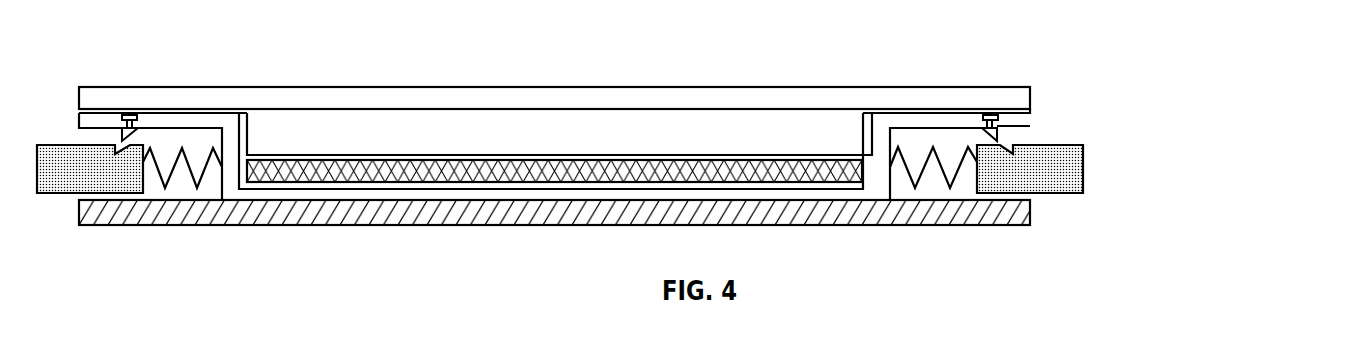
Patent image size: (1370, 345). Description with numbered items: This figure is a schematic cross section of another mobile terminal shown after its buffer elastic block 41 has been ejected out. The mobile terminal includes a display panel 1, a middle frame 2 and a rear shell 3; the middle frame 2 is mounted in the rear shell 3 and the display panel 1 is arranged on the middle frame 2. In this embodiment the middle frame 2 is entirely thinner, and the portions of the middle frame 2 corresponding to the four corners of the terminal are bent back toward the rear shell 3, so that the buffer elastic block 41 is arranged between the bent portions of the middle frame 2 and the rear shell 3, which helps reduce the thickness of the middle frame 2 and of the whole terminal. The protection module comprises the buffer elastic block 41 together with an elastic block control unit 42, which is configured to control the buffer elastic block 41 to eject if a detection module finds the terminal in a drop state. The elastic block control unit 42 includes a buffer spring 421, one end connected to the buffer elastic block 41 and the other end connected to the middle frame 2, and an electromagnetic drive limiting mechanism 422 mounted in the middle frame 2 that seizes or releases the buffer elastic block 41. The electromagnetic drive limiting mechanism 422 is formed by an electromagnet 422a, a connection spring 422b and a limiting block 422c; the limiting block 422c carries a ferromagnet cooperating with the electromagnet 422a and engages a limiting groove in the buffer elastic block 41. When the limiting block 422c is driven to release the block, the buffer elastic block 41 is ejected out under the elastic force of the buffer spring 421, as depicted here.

The display panel 1 is at (993, 88).
The middle frame 2 is at (940, 118).
The rear shell 3 is at (1000, 222).
The buffer elastic block 41 is at (1037, 188).
The elastic block control unit 42 is at (736, 127).
The buffer spring 421 is at (943, 168).
The electromagnetic drive limiting mechanism 422 is at (699, 111).
The electromagnet 422a is at (1000, 113).
The connection spring 422b is at (997, 123).
The limiting block 422c is at (998, 136).